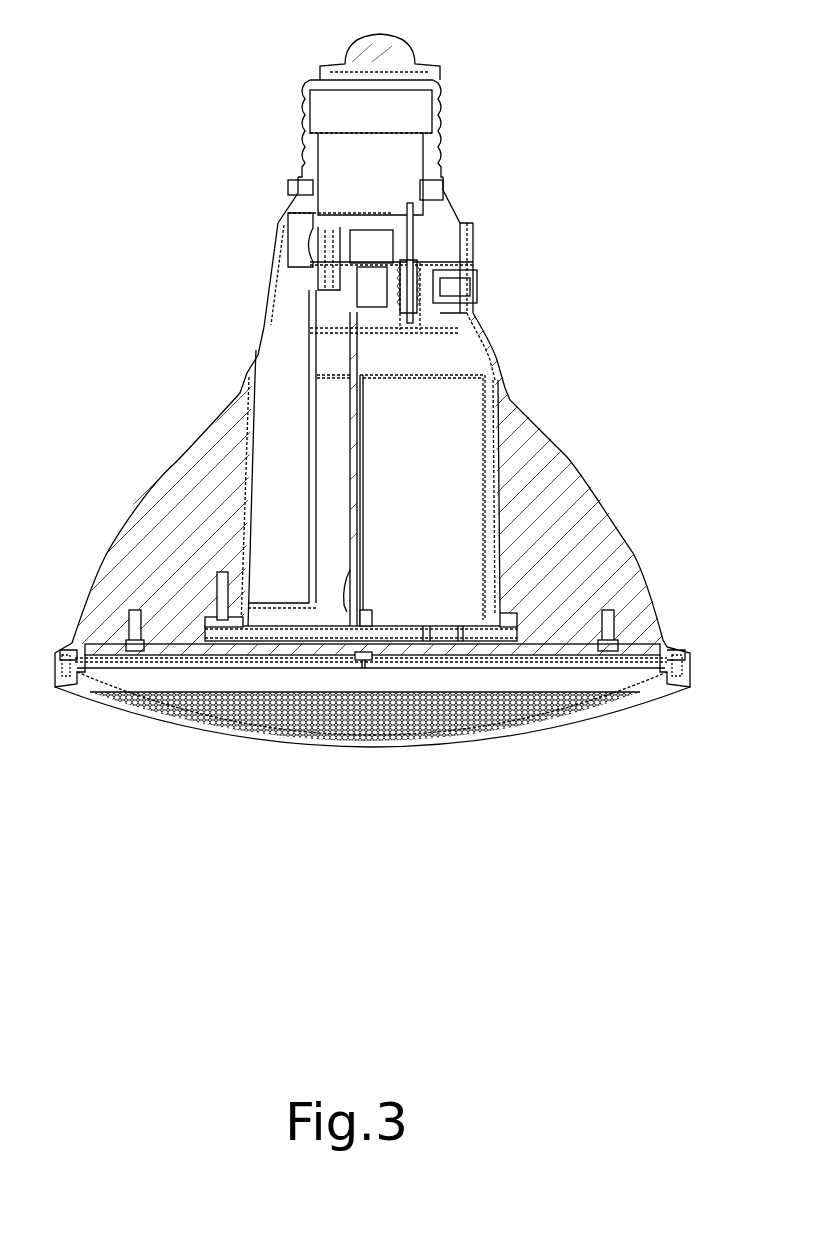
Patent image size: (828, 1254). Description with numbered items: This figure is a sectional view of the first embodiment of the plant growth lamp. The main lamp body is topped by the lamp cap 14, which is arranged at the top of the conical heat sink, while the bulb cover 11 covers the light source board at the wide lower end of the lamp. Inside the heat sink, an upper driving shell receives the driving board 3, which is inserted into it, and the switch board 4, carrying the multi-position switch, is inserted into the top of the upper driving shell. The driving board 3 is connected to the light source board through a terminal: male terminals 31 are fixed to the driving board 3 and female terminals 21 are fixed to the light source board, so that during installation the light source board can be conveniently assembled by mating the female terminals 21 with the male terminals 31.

The lamp cap 14 is at (373, 48).
The switch board 4 is at (412, 247).
The driving board 3 is at (353, 587).
The male terminals 31 is at (365, 620).
The female terminals 21 is at (365, 660).
The bulb cover 11 is at (500, 720).